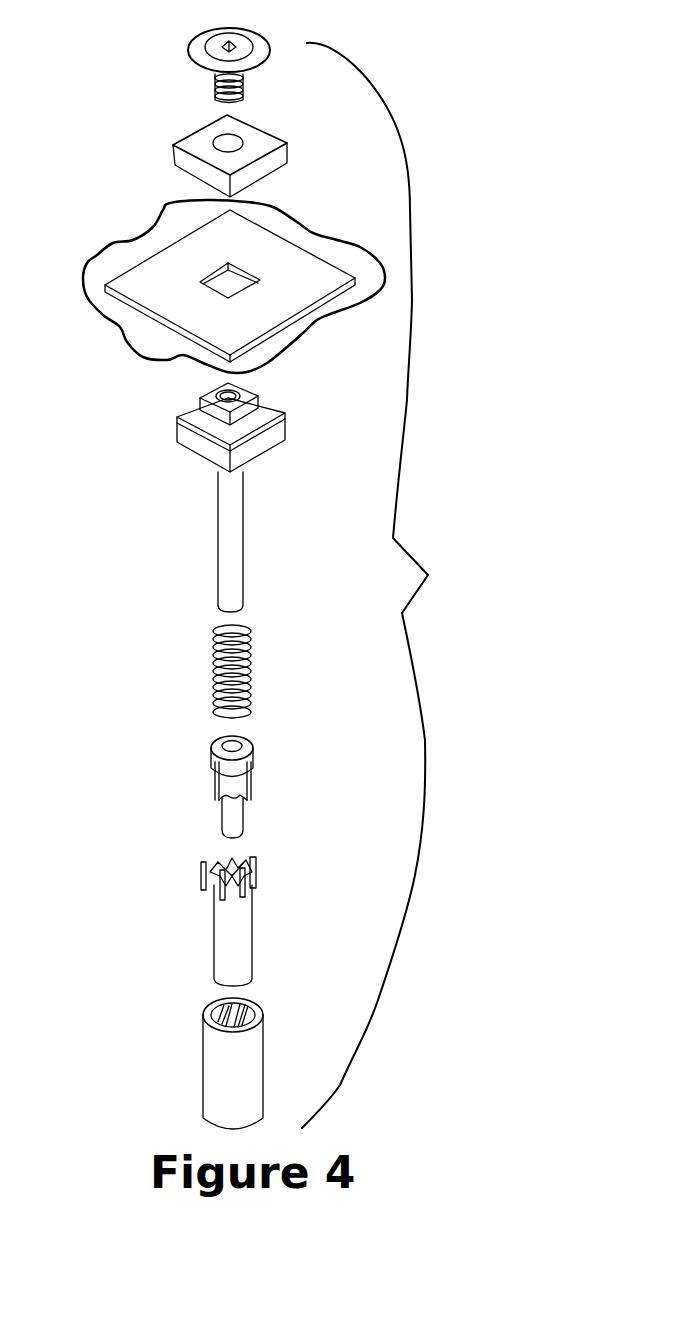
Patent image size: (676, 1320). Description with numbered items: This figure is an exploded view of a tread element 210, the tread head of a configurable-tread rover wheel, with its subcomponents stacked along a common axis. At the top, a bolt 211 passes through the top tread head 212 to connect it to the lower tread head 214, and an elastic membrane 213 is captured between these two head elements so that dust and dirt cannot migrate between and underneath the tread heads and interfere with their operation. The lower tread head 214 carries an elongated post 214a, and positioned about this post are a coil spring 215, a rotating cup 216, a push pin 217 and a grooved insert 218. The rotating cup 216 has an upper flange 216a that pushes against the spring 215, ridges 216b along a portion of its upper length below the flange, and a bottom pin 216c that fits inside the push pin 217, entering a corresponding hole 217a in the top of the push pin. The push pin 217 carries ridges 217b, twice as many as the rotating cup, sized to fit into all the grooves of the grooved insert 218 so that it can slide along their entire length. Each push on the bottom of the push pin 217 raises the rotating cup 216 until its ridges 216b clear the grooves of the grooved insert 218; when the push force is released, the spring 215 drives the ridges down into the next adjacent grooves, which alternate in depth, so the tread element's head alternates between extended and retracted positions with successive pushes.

The tread element 210 is at (399, 585).
The bolt 211 is at (200, 54).
The top tread head 212 is at (193, 143).
The elastic membrane 213 is at (130, 328).
The lower tread head 214 is at (190, 437).
The elongated post 214a is at (236, 533).
The coil spring 215 is at (215, 676).
The rotating cup 216 is at (240, 788).
The upper flange 216a is at (236, 747).
The ridges 216b is at (250, 784).
The bottom pin 216c is at (238, 823).
The push pin 217 is at (220, 911).
The hole 217a is at (192, 861).
The ridges 217b is at (252, 882).
The grooved insert 218 is at (215, 1067).